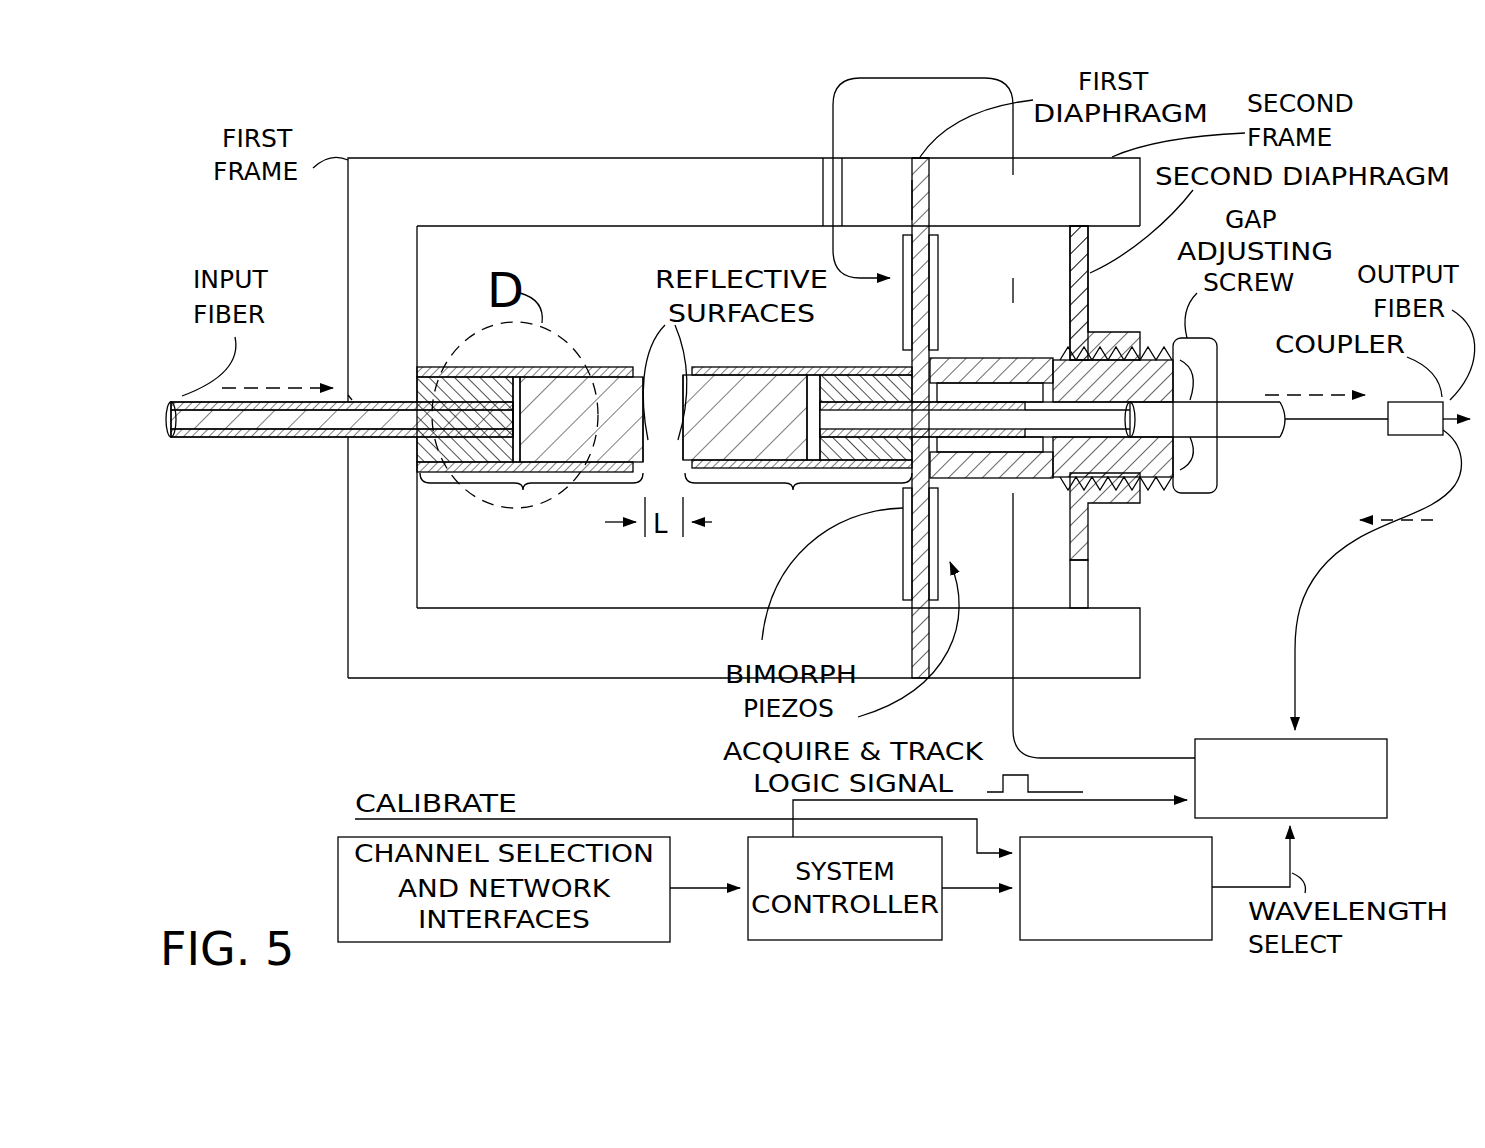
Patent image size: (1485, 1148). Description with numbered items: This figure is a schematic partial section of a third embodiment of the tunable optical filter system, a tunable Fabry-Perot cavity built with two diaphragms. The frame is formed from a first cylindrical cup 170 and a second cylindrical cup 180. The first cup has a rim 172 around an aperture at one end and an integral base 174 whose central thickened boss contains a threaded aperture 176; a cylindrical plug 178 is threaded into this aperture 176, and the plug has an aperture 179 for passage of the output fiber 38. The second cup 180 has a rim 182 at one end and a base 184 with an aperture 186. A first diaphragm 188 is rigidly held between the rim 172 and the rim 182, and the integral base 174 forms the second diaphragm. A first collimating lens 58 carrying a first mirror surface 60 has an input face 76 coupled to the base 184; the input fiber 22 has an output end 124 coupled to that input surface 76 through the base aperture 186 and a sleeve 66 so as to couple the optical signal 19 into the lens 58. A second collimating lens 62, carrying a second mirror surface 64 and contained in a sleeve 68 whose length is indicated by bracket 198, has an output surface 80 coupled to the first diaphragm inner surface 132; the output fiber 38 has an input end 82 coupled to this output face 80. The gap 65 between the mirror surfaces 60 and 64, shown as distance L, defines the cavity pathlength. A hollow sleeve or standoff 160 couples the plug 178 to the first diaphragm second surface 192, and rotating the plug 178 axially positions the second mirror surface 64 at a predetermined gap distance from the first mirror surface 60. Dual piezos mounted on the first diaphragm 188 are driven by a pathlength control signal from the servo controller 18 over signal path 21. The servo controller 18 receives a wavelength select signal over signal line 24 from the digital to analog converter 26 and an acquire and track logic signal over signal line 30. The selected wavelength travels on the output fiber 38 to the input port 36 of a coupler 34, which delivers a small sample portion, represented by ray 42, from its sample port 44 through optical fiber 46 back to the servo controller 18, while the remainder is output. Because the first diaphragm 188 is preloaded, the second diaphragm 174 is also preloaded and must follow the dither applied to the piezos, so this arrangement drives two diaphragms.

The servo controller 18 is at (1358, 738).
The optical signal 19 is at (310, 380).
The signal path 21 is at (834, 130).
The input fiber 22 is at (330, 438).
The signal line 24 is at (1283, 885).
The digital to analog converter 26 is at (1100, 836).
The signal line 30 is at (793, 808).
The coupler 34 is at (1413, 398).
The input port 36 is at (1387, 419).
The output fiber 38 is at (1253, 397).
The ray 42 is at (1396, 509).
The sample port 44 is at (1445, 435).
The optical fiber 46 is at (1297, 650).
The first collimating lens 58 is at (584, 422).
The first mirror surface 60 is at (646, 370).
The second collimating lens 62 is at (743, 436).
The second mirror surface 64 is at (672, 382).
The gap 65 is at (641, 517).
The sleeve 66 is at (543, 368).
The sleeve 68 is at (857, 367).
The first collimating lens input surface 76 is at (527, 423).
The second collimating lens output surface 80 is at (806, 420).
The output fiber input end 82 is at (826, 424).
The input fiber output end 124 is at (531, 507).
The first diaphragm inner surface 132 is at (903, 352).
The hollow sleeve or standoff 160 is at (990, 357).
The first cylindrical cup 170 is at (1107, 216).
The rim of first cylindrical cup 172 is at (932, 193).
The integral base / second diaphragm 174 is at (1070, 243).
The threaded aperture 176 is at (1093, 480).
The cylindrical plug 178 is at (1143, 472).
The plug aperture 179 is at (1222, 435).
The second cylindrical cup 180 is at (622, 200).
The rim of second cylindrical cup 182 is at (911, 194).
The base of second cylindrical cup 184 is at (405, 542).
The second cup base aperture 186 is at (355, 400).
The first diaphragm 188 is at (920, 157).
The first diaphragm second surface 192 is at (942, 350).
The bracket 198 is at (798, 500).